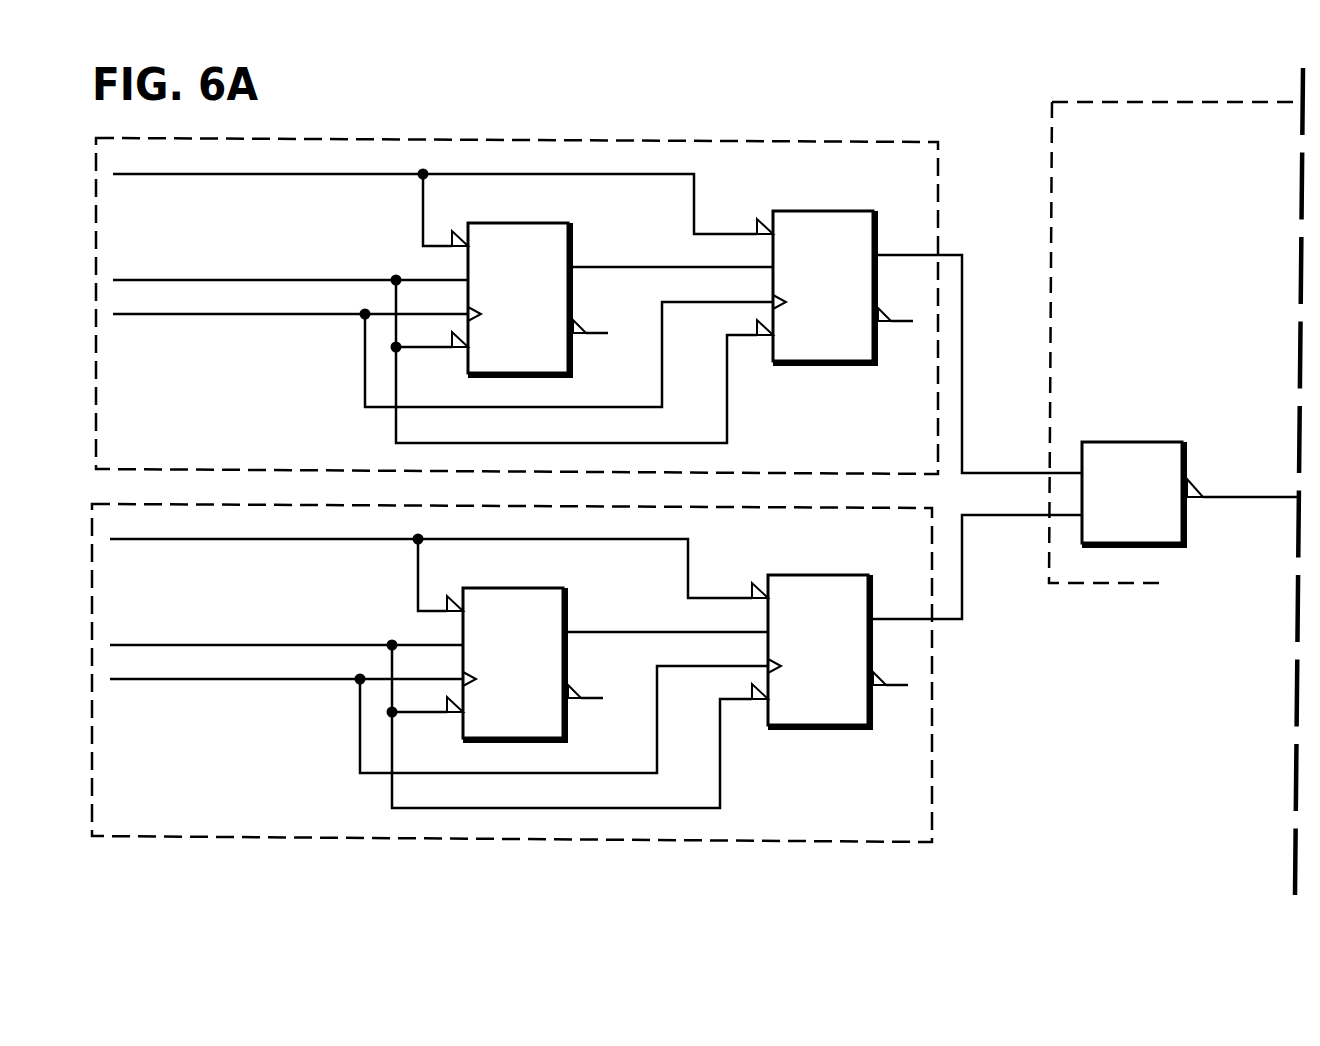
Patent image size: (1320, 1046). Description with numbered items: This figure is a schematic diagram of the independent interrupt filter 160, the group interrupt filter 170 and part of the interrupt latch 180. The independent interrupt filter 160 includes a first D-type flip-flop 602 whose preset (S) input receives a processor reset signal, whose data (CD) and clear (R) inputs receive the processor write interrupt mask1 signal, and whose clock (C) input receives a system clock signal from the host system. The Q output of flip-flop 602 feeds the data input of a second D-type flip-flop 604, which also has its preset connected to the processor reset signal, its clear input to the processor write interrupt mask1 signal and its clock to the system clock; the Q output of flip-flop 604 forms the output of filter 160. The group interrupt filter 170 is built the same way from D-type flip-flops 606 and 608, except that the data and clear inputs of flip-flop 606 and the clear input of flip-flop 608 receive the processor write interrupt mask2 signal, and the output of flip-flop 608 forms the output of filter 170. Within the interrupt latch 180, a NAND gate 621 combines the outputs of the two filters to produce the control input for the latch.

The independent interrupt filter 160 is at (556, 140).
The group interrupt filter 170 is at (933, 728).
The interrupt latch 180 is at (1108, 102).
The first D-type flip-flop 602 is at (530, 284).
The second D-type flip-flop 604 is at (835, 271).
The D-type flip-flop 606 is at (525, 649).
The D-type flip-flop 608 is at (830, 635).
The NAND gate 621 is at (1187, 442).